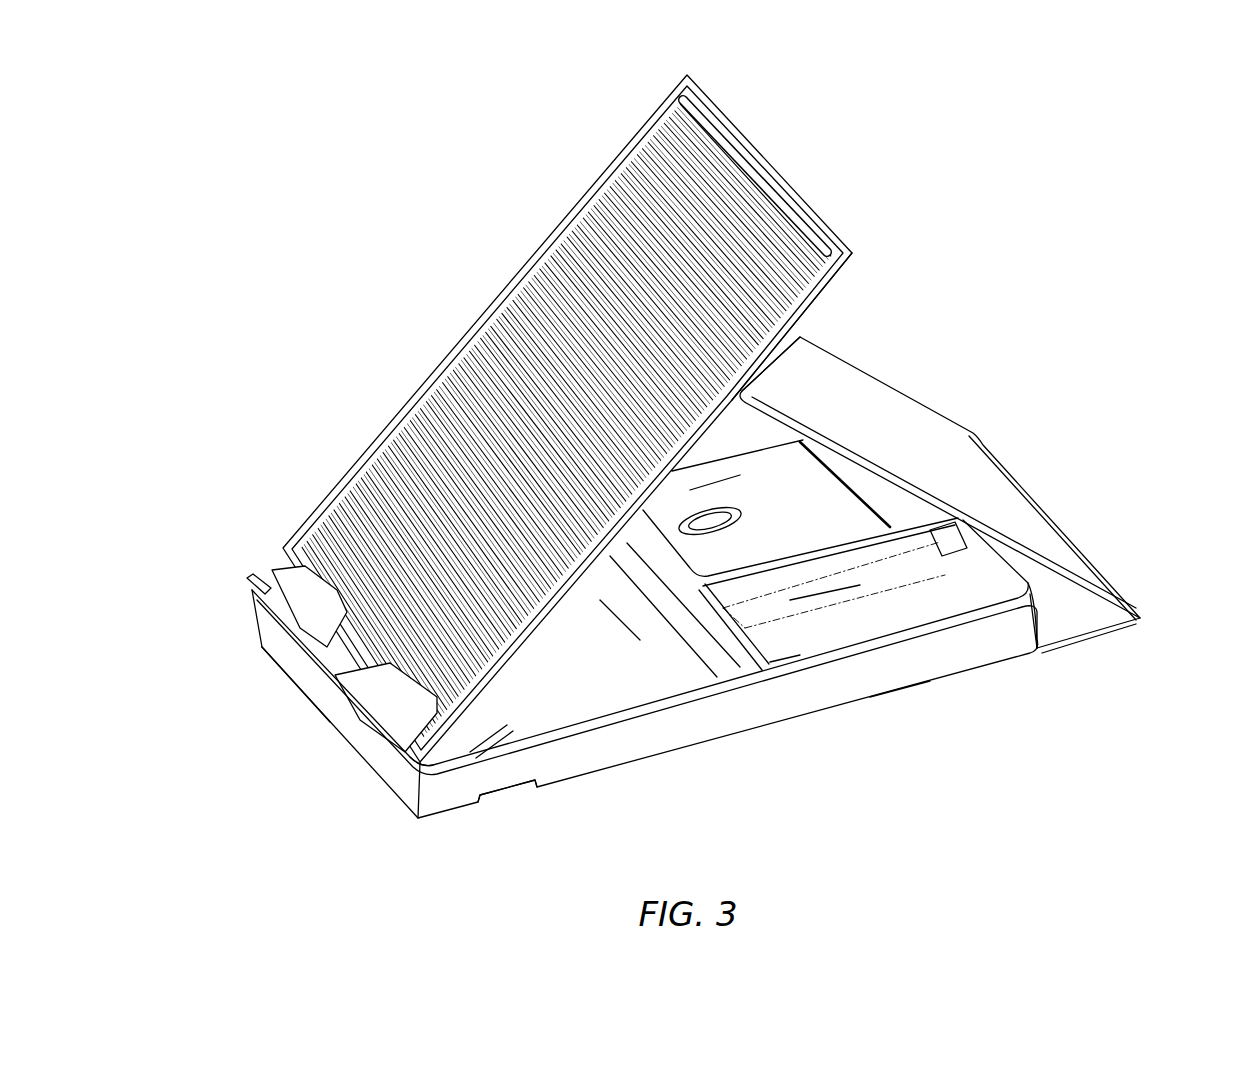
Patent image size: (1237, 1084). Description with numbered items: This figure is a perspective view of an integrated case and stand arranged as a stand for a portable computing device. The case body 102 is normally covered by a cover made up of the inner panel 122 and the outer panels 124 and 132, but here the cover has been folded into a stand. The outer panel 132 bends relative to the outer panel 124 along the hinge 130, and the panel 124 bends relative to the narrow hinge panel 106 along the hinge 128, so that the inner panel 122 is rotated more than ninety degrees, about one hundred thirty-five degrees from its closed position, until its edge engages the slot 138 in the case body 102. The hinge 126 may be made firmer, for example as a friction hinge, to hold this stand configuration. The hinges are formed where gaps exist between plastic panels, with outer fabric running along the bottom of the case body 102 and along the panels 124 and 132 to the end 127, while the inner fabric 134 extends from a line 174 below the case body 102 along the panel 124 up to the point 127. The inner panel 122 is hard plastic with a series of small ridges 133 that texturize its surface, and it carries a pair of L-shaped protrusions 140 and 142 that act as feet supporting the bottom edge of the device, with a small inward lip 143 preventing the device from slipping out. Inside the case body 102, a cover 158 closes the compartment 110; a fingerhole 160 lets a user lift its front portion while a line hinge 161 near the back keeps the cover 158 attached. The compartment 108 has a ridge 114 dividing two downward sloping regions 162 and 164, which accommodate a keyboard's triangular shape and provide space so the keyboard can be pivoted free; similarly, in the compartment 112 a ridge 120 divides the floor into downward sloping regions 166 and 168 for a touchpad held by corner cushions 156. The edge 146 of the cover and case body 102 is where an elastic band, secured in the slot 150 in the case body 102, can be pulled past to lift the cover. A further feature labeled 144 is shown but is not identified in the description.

The case body 102 is at (608, 755).
The hinge panel 106 is at (1051, 622).
The compartment 108 is at (612, 606).
The compartment 110 is at (713, 492).
The compartment 112 is at (835, 590).
The ridge 114 is at (503, 733).
The ridge 120 is at (820, 605).
The inner panel 122 is at (548, 310).
The outer panel 124 is at (945, 372).
The hinge 126 is at (1073, 645).
The end 127 is at (867, 243).
The hinge 128 is at (1145, 620).
The hinge 130 is at (720, 425).
The outer panel 132 is at (810, 313).
The small ridges 133 is at (393, 418).
The inner fabric 134 is at (799, 445).
The slot 138 is at (415, 770).
The protrusion 140 is at (317, 608).
The protrusion 142 is at (397, 695).
The inward lip 143 is at (268, 580).
The slot 144 is at (797, 223).
The edge 146 is at (330, 668).
The slot 150 is at (505, 800).
The corner cushions 156 is at (808, 637).
The cover 158 is at (731, 491).
The fingerhole 160 is at (693, 515).
The hinge 161 is at (903, 518).
The downward sloping region 162 is at (576, 650).
The downward sloping region 164 is at (468, 740).
The downward sloping region 166 is at (860, 600).
The downward sloping region 168 is at (900, 690).
The line 174 is at (1047, 627).